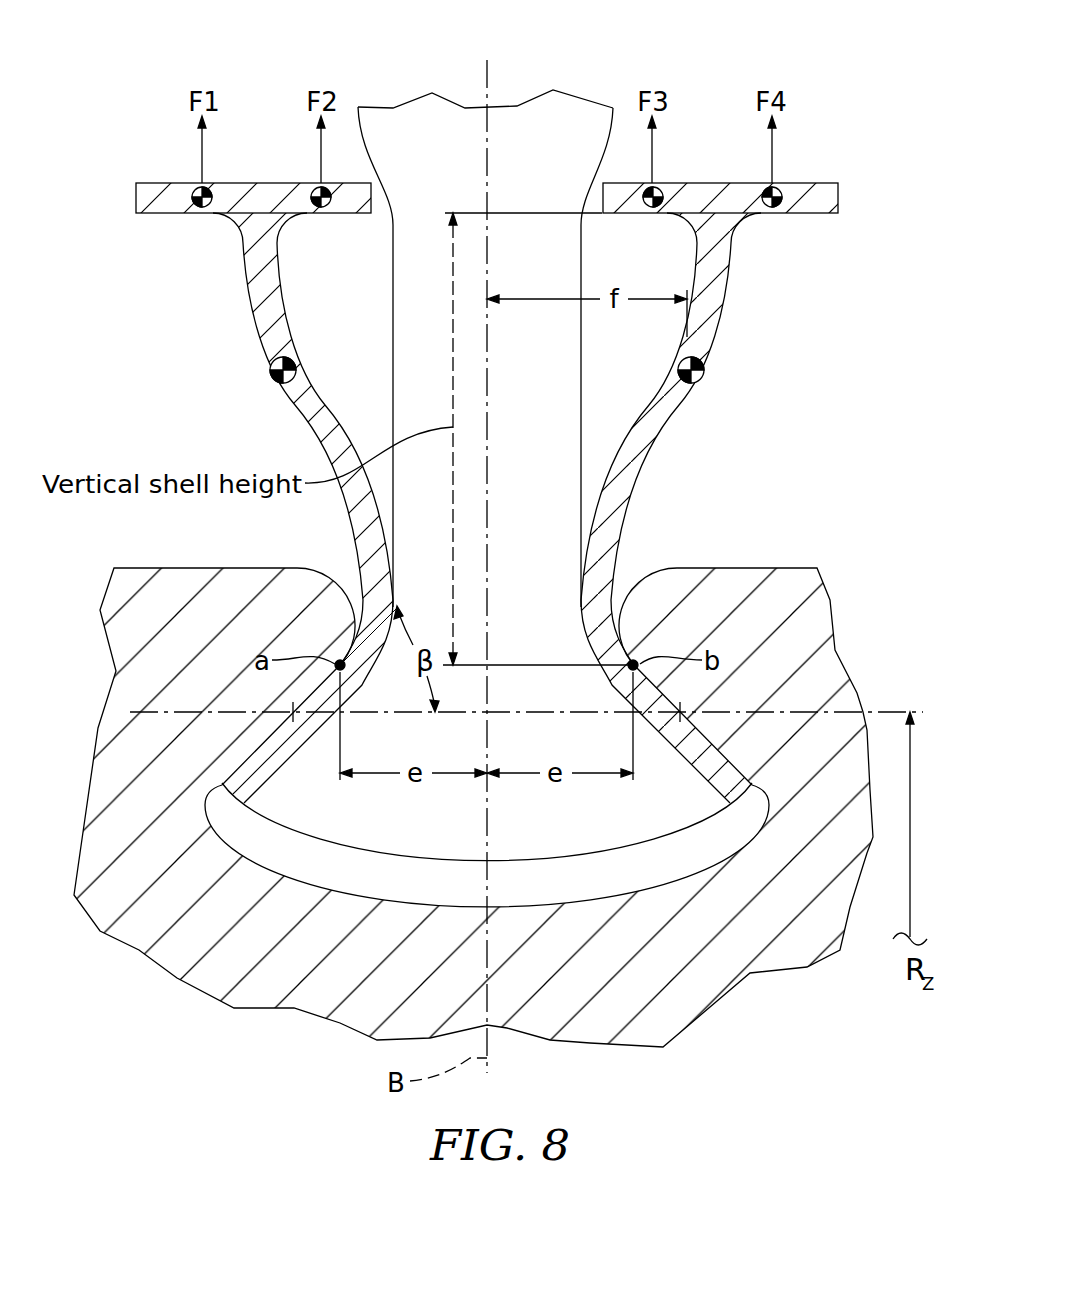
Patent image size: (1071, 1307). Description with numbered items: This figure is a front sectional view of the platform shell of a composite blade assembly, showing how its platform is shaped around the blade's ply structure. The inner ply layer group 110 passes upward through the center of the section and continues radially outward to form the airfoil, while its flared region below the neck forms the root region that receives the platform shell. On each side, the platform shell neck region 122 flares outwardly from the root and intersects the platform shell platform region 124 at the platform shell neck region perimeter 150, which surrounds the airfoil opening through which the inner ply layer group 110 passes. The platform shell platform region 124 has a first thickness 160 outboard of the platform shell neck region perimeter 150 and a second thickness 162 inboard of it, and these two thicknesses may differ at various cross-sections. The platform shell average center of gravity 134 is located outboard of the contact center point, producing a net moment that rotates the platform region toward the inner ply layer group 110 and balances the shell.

The inner ply layer group 110 is at (518, 123).
The platform shell neck region 122 is at (608, 536).
The platform shell platform region 124 is at (713, 298).
The platform shell average center of gravity 134 is at (277, 360).
The platform shell neck region perimeter 150 is at (260, 228).
The first thickness 160 is at (303, 203).
The second thickness 162 is at (162, 197).